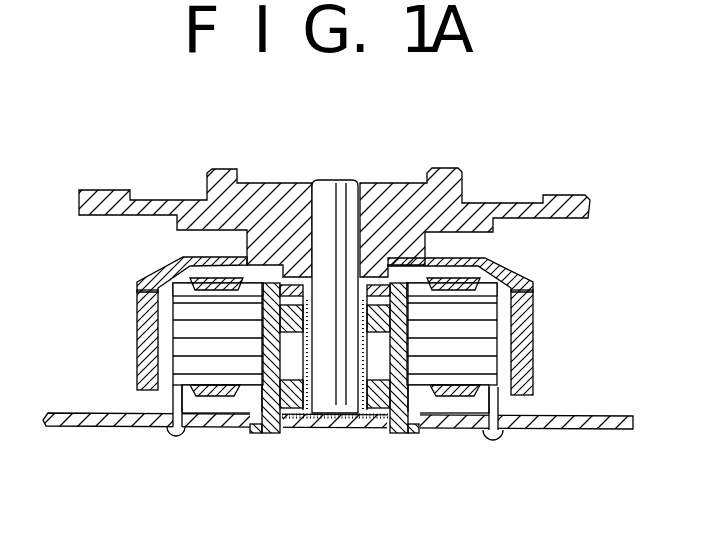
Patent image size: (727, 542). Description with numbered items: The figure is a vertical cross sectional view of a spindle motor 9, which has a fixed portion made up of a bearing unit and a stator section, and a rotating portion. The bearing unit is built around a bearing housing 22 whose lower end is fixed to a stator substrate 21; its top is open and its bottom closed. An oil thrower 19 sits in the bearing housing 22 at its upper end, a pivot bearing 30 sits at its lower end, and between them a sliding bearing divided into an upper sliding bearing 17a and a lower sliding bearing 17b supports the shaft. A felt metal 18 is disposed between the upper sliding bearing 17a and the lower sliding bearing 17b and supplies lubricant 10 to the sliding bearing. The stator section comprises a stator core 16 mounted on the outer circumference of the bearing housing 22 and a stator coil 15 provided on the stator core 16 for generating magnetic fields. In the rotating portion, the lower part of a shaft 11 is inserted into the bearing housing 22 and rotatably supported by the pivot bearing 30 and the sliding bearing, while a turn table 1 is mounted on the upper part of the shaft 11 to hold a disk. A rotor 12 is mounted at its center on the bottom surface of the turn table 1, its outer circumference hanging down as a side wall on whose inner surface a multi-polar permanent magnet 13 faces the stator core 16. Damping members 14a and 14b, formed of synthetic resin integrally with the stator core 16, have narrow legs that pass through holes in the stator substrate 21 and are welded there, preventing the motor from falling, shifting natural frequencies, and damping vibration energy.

The turn table 1 is at (213, 183).
The spindle motor 9 is at (514, 198).
The lubricant 10 is at (278, 434).
The shaft 11 is at (342, 184).
The rotor 12 is at (523, 278).
The permanent magnet 13 is at (520, 321).
The damping member 14a is at (176, 438).
The damping member 14b is at (497, 440).
The stator coil 15 is at (213, 426).
The stator core 16 is at (486, 368).
The upper sliding bearing 17a is at (305, 428).
The lower sliding bearing 17b is at (282, 316).
The felt metal 18 is at (303, 421).
The oil thrower 19 is at (299, 292).
The stator substrate 21 is at (68, 428).
The bearing housing 22 is at (412, 433).
The pivot bearing 30 is at (362, 426).